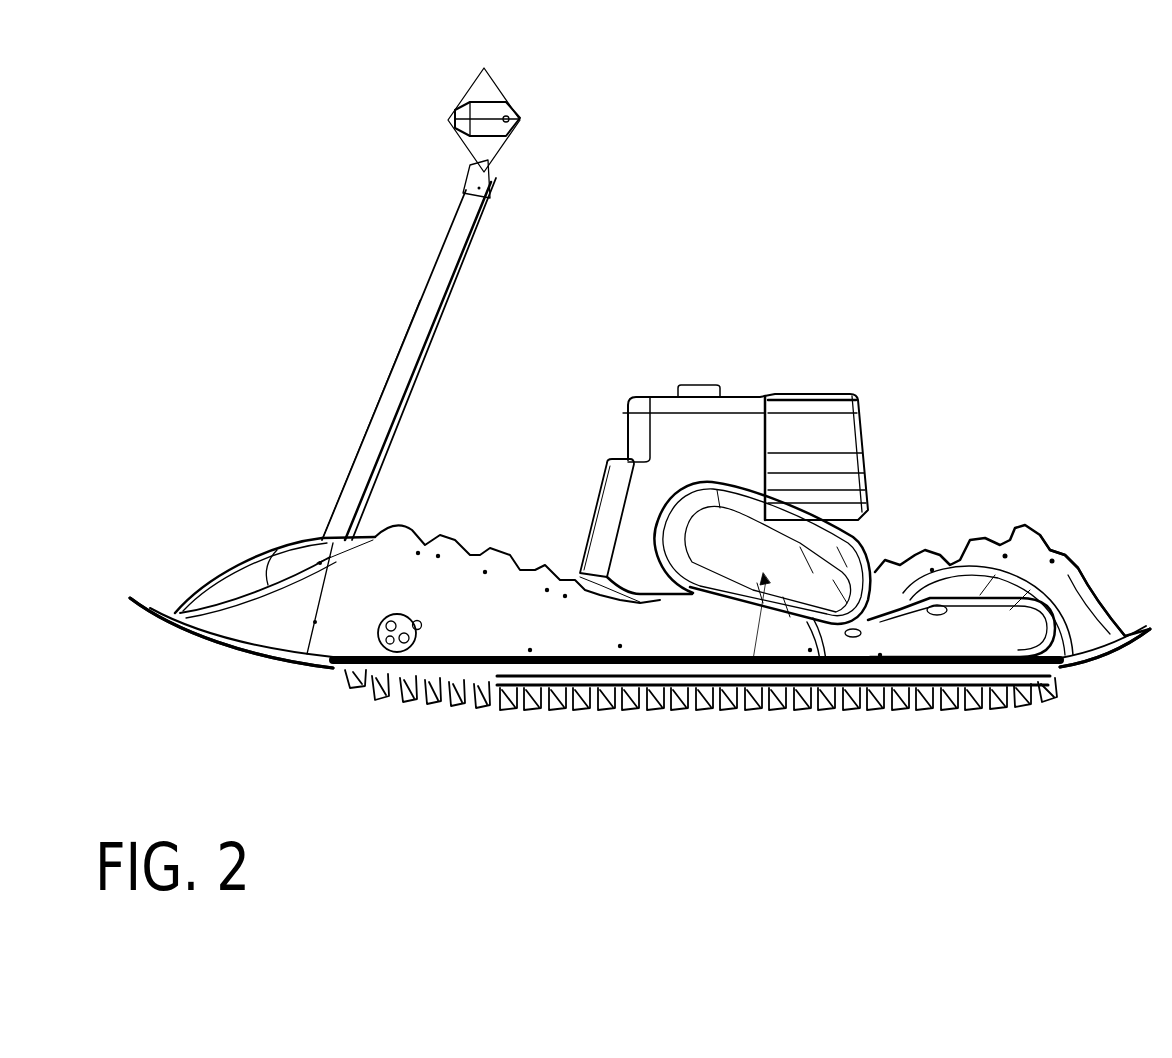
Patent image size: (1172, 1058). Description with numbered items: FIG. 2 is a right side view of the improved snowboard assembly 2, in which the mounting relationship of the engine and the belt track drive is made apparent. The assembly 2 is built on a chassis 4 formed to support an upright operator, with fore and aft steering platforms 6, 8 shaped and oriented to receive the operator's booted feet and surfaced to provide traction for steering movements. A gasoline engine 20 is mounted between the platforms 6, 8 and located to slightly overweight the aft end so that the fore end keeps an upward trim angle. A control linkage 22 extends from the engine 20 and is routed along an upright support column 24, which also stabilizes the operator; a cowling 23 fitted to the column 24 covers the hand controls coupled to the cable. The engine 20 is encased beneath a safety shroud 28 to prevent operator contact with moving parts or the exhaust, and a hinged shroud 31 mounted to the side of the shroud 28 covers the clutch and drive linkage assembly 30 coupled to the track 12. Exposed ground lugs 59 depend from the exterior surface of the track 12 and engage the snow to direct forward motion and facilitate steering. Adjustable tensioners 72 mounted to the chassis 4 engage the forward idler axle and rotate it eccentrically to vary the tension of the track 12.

The snowboard assembly 2 is at (960, 305).
The chassis 4 is at (583, 700).
The fore steering platform 6 is at (503, 545).
The aft steering platform 8 is at (983, 535).
The track 12 is at (944, 707).
The gasoline engine 20 is at (800, 427).
The control linkage 22 is at (470, 283).
The cowling 23 is at (452, 119).
The support column 24 is at (387, 382).
The safety shroud 28 is at (628, 396).
The drive linkage assembly 30 is at (777, 705).
The hinged shroud 31 is at (820, 557).
The ground lugs 59 is at (452, 708).
The adjustable tensioners 72 is at (377, 634).